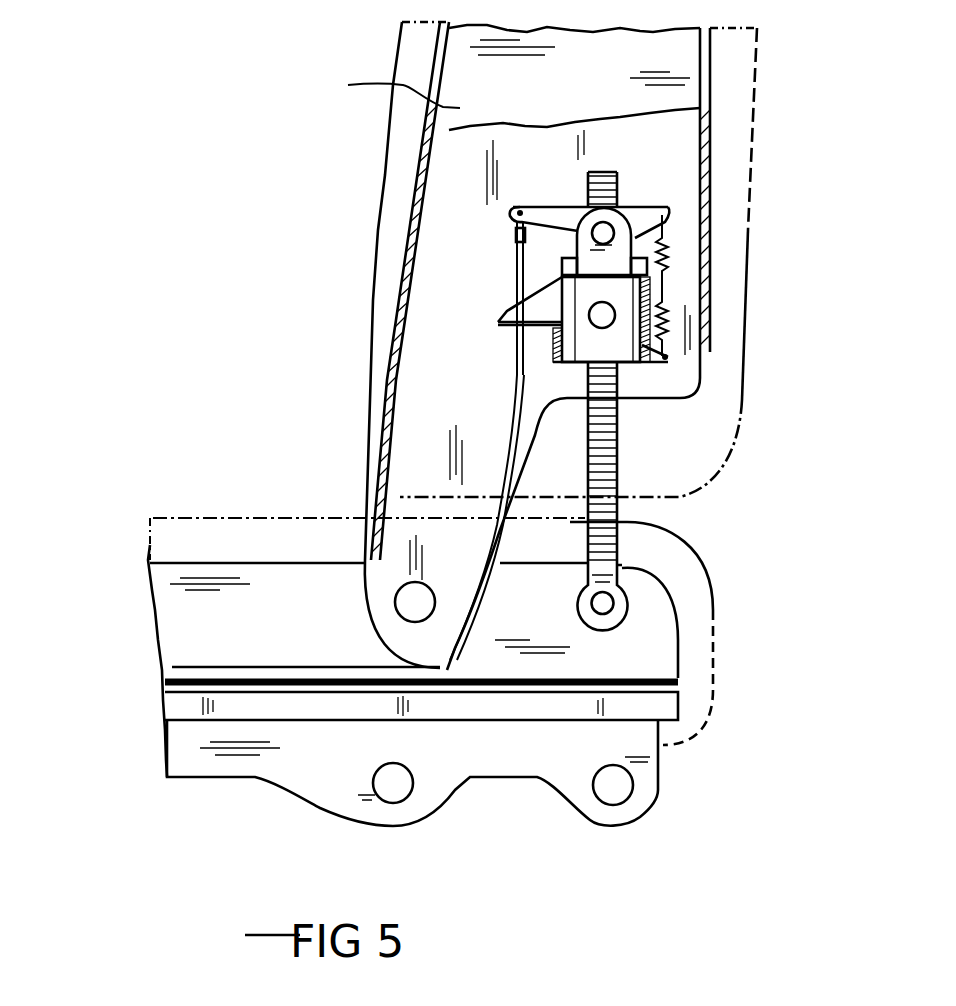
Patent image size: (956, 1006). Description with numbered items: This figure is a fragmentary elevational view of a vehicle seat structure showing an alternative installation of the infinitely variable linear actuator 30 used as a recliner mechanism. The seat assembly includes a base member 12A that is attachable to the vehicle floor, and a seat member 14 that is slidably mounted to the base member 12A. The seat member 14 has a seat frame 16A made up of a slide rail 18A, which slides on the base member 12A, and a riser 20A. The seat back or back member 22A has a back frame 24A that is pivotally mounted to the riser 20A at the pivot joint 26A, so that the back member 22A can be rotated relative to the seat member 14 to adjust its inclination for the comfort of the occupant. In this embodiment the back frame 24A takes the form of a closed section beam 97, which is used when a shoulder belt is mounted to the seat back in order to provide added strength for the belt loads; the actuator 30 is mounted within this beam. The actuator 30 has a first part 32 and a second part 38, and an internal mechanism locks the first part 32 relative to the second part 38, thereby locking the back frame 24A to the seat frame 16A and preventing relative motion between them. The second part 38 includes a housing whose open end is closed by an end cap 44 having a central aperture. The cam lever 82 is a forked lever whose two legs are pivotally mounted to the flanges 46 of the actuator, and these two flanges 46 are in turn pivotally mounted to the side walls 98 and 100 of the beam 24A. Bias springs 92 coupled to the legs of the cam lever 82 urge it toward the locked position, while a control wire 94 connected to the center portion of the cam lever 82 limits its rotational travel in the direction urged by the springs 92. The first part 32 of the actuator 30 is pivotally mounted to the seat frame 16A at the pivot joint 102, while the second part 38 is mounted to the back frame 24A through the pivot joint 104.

The base member 12A is at (252, 778).
The seat member 14 is at (272, 508).
The seat frame 16A is at (192, 556).
The slide rail 18A is at (693, 703).
The riser 20A is at (662, 626).
The back member 22A is at (768, 168).
The back frame 24A is at (392, 293).
The pivot joint 26A is at (396, 612).
The infinitely variable linear actuator 30 is at (676, 277).
The first part 32 is at (628, 473).
The second part 38 is at (545, 348).
The end cap 44 is at (517, 250).
The flanges 46 is at (637, 213).
The cam lever 82 is at (560, 195).
The bias springs 92 is at (668, 249).
The control wire 94 is at (503, 310).
The closed section beam 97 is at (408, 227).
The side wall 98 is at (375, 85).
The side wall 100 is at (447, 182).
The pivot joint 102 is at (610, 605).
The pivot joint 104 is at (608, 322).